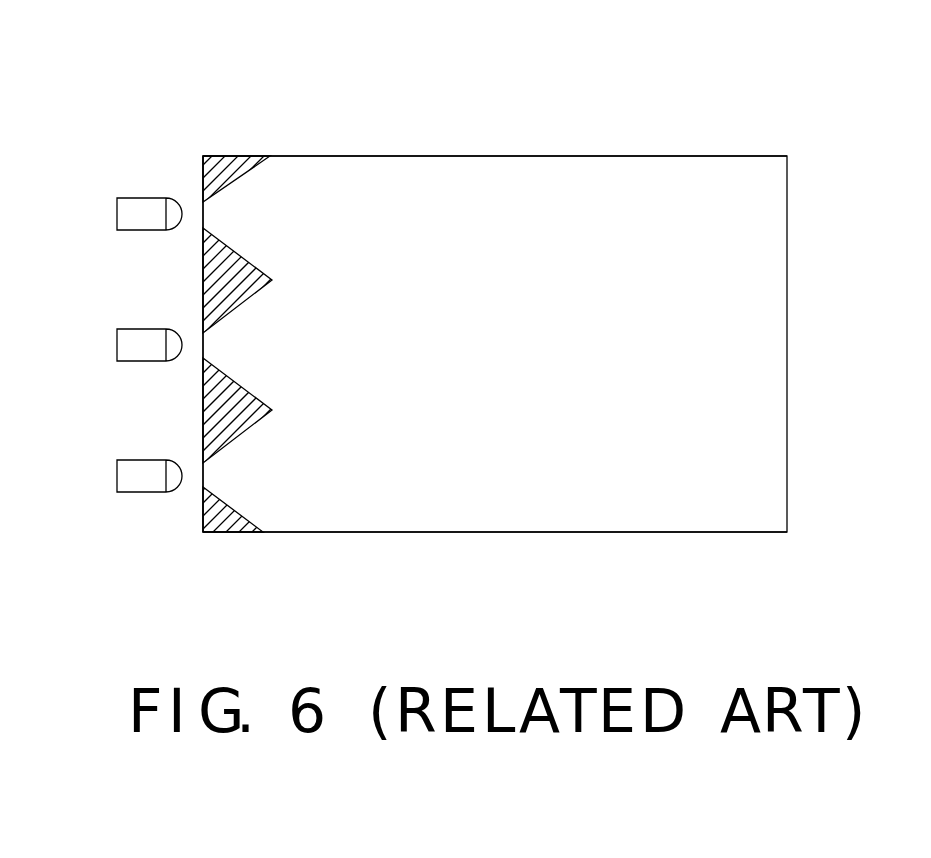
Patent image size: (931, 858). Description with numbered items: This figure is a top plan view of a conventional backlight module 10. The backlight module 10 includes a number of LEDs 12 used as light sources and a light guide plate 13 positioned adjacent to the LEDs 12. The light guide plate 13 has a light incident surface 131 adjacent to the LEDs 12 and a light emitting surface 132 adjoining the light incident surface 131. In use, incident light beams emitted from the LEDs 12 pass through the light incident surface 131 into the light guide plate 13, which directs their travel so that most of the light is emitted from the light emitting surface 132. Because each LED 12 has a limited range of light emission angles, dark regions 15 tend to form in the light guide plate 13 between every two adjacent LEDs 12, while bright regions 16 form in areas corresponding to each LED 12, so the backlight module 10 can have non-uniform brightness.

The backlight module 10 is at (568, 41).
The LEDs 12 is at (147, 222).
The light guide plate 13 is at (732, 148).
The light incident surface 131 is at (193, 180).
The light emitting surface 132 is at (525, 213).
The dark regions 15 is at (235, 260).
The bright regions 16 is at (283, 485).